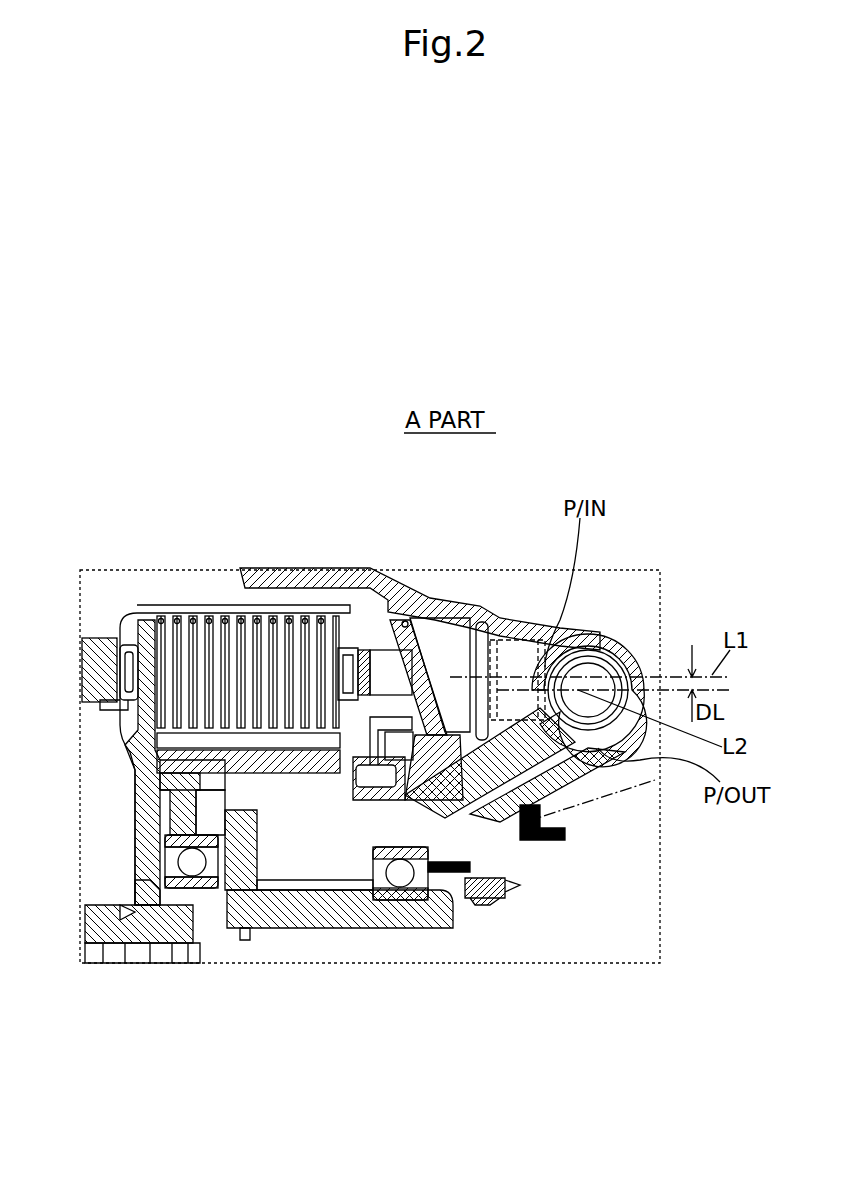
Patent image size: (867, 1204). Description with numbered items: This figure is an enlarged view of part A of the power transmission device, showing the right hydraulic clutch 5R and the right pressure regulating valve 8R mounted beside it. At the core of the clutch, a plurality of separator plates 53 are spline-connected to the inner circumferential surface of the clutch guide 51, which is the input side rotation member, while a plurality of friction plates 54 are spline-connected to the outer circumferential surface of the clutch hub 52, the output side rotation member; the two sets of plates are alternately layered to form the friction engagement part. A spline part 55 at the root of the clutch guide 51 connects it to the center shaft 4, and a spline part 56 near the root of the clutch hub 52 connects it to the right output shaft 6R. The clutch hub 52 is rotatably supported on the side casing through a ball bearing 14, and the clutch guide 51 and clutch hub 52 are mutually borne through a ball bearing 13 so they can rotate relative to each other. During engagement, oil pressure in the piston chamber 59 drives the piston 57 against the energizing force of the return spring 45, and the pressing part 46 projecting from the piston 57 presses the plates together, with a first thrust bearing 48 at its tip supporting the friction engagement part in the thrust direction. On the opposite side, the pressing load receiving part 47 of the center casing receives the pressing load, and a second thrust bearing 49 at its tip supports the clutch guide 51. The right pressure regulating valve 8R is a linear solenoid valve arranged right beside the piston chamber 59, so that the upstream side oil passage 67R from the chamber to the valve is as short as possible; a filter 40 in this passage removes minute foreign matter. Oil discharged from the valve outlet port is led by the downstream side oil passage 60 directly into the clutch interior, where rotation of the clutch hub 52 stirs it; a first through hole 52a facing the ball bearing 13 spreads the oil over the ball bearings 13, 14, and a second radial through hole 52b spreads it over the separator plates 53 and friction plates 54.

The center shaft 4 is at (103, 950).
The right hydraulic clutch 5R is at (143, 597).
The right output shaft 6R is at (405, 950).
The right pressure regulating valve 8R is at (605, 630).
The ball bearing 13 is at (137, 840).
The ball bearing 14 is at (360, 883).
The filter 40 is at (487, 633).
The return spring 45 is at (357, 787).
The pressing part 46 is at (363, 648).
The pressing load receiving part 47 is at (107, 637).
The first thrust bearing 48 is at (375, 674).
The second thrust bearing 49 is at (82, 667).
The clutch guide 51 is at (193, 607).
The clutch hub 52 is at (250, 777).
The first through hole 52a is at (248, 870).
The second through hole 52b is at (137, 783).
The separator plates 53 is at (173, 607).
The friction plates 54 is at (220, 773).
The spline part 55 is at (150, 953).
The spline part 56 is at (293, 933).
The piston 57 is at (415, 600).
The piston chamber 59 is at (443, 637).
The downstream side oil passage 60 is at (550, 762).
The right upstream side oil passage 67R is at (565, 622).